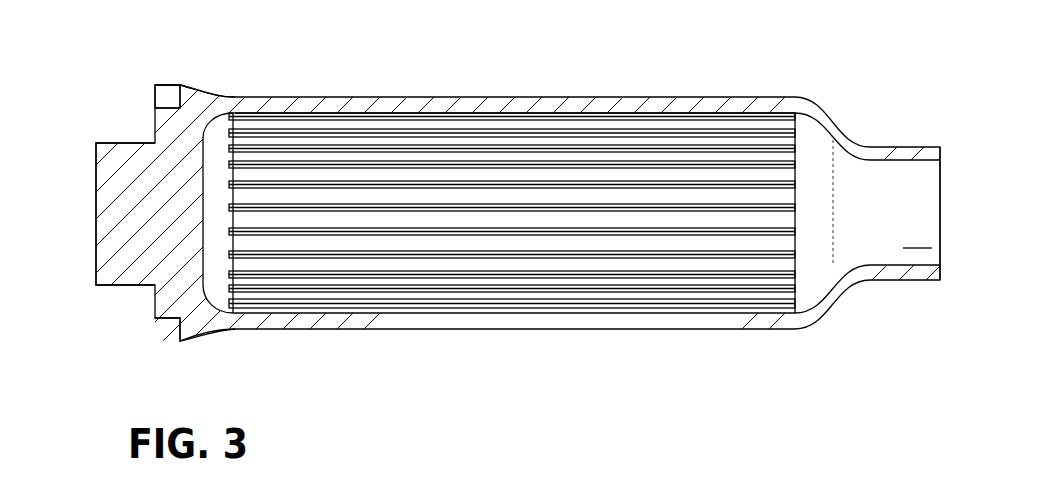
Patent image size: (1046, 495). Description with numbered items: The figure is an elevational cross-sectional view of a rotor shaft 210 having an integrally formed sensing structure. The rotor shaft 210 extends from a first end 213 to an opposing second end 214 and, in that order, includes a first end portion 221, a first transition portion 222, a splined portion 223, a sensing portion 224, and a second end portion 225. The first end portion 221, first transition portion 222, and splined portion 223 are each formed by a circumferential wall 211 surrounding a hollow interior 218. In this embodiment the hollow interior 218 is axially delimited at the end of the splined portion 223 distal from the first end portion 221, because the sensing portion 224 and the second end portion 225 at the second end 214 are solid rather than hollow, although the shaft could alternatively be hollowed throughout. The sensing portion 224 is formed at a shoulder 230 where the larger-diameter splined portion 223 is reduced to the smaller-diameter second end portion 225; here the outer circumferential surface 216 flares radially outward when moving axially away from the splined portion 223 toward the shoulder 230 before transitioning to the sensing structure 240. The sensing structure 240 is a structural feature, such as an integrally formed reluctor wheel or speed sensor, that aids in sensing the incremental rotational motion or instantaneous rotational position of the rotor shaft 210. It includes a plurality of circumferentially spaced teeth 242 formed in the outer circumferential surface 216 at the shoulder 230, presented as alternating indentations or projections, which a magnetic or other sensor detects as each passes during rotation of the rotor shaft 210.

The rotor shaft 210 is at (401, 65).
The circumferential wall 211 is at (827, 117).
The first end 213 is at (940, 147).
The second end 214 is at (95, 163).
The outer circumferential surface 216 is at (510, 97).
The hollow interior 218 is at (862, 244).
The first end portion 221 is at (918, 290).
The first transition portion 222 is at (829, 327).
The splined portion 223 is at (579, 340).
The sensing portion 224 is at (205, 347).
The second end portion 225 is at (120, 295).
The shoulder 230 is at (156, 67).
The sensing structure 240 is at (146, 81).
The teeth 242 is at (170, 93).